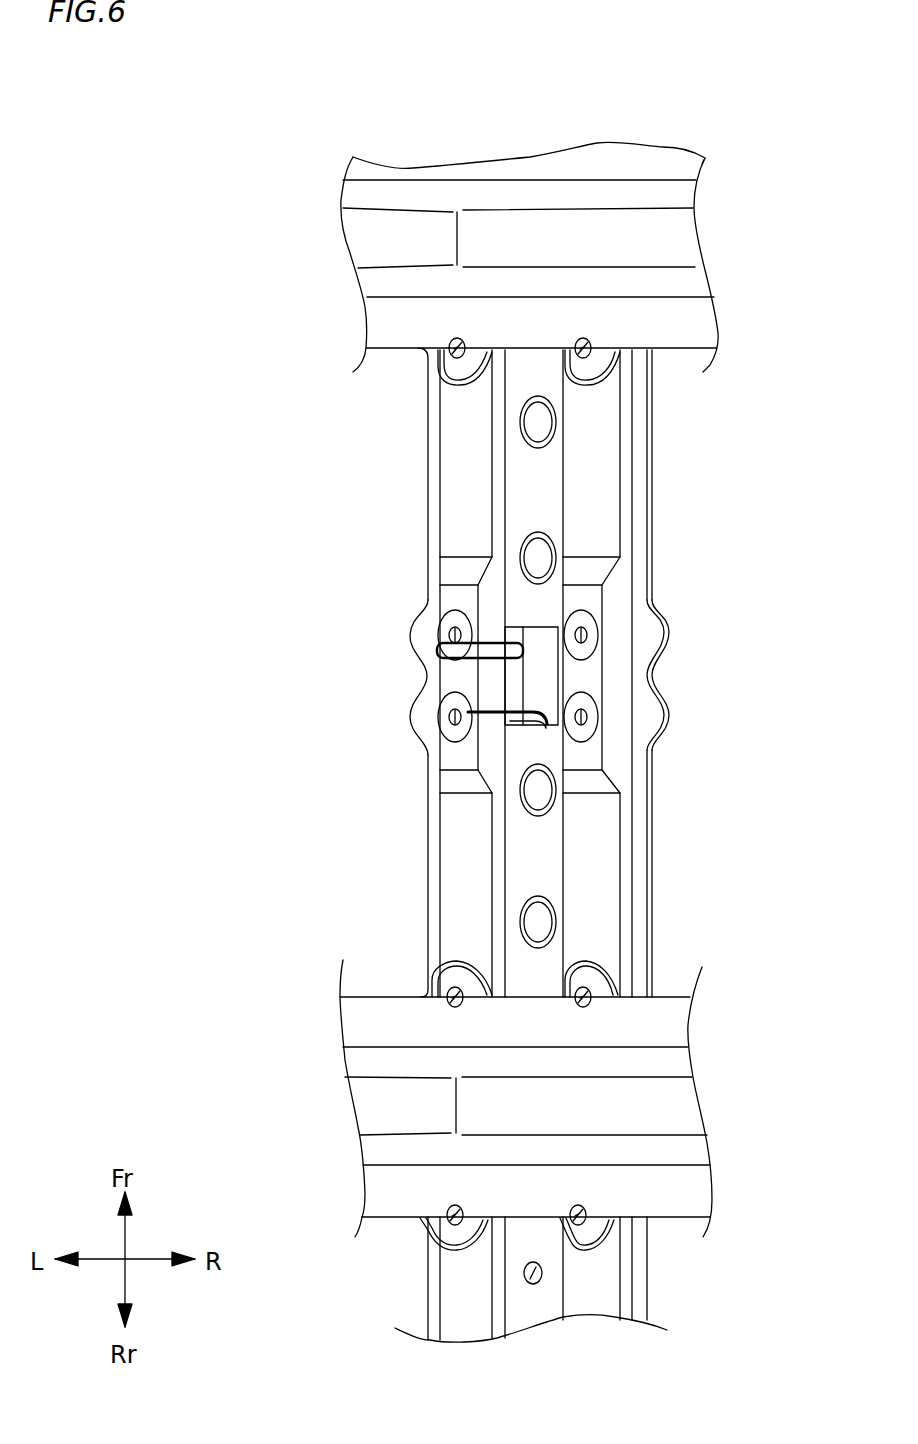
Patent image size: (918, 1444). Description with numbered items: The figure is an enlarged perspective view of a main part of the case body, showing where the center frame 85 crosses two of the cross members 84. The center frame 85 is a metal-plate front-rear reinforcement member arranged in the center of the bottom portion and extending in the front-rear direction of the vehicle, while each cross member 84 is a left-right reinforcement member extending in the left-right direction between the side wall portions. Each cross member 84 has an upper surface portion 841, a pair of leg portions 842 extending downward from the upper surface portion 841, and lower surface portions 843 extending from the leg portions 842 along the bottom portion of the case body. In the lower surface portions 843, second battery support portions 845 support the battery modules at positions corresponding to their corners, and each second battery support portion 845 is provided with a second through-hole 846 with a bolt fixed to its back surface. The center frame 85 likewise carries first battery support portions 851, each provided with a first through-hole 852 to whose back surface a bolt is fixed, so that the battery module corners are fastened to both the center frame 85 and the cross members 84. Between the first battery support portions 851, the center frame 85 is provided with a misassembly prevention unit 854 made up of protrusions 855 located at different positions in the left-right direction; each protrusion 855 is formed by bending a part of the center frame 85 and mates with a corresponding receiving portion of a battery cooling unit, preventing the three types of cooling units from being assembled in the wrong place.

The cross member 84 is at (655, 140).
The upper surface portion 841 is at (680, 242).
The leg portions 842 is at (680, 196).
The lower surface portions 843 is at (680, 169).
The second battery support portion 845 is at (583, 368).
The second through-hole 846 is at (590, 342).
The center frame 85 is at (660, 488).
The first battery support portion 851 is at (445, 712).
The first through-hole 852 is at (452, 632).
The misassembly prevention unit 854 is at (531, 676).
The protrusions 855 is at (492, 645).